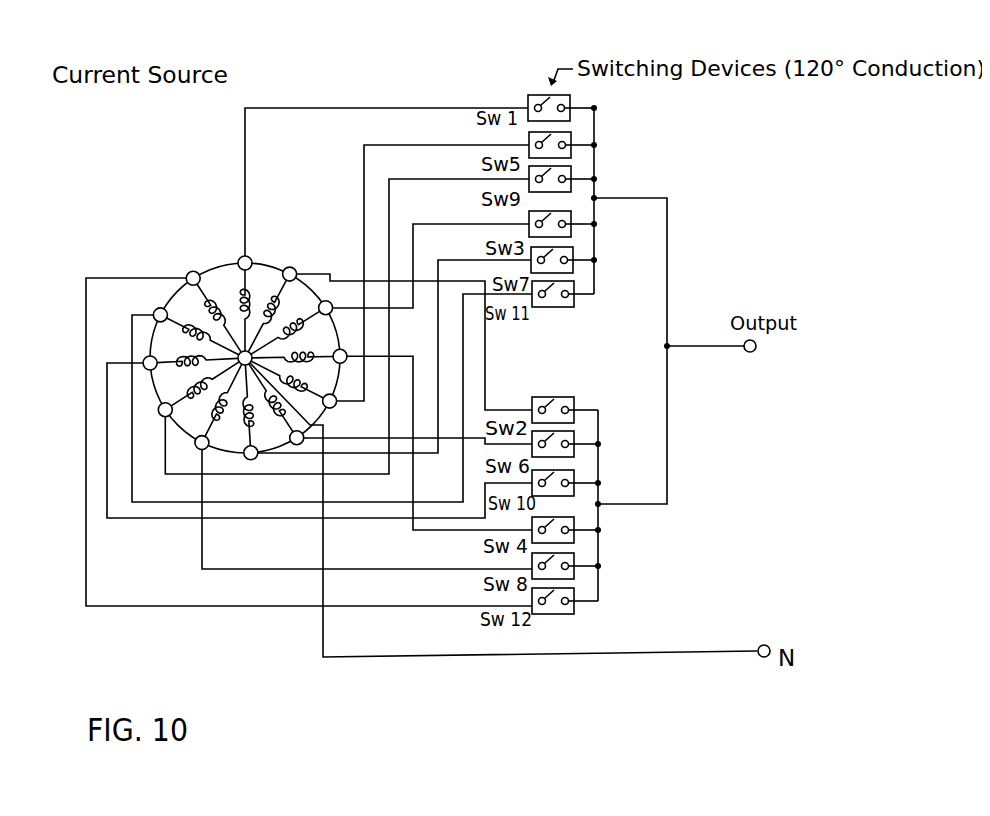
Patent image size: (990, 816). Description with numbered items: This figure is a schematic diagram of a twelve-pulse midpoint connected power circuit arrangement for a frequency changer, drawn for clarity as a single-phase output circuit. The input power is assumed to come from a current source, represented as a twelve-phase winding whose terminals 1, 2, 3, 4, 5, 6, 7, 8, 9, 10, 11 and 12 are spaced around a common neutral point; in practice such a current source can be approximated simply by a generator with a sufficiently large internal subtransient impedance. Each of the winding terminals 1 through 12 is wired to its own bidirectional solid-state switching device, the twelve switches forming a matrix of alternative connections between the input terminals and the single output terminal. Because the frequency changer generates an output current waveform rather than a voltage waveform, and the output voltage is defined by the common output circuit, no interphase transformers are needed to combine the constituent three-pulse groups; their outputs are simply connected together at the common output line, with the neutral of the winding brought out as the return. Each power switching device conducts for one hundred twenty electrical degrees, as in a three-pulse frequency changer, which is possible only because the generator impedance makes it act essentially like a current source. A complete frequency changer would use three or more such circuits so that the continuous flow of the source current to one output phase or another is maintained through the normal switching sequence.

The current source phase winding terminal 1 is at (258, 293).
The current source phase winding terminal 2 is at (275, 300).
The current source phase winding terminal 3 is at (297, 320).
The current source phase winding terminal 4 is at (306, 343).
The current source phase winding terminal 5 is at (303, 382).
The current source phase winding terminal 6 is at (293, 402).
The current source phase winding terminal 7 is at (258, 423).
The current source phase winding terminal 8 is at (220, 420).
The current source phase winding terminal 9 is at (199, 404).
The current source phase winding terminal 10 is at (185, 375).
The current source phase winding terminal 11 is at (186, 319).
The current source phase winding terminal 12 is at (206, 299).